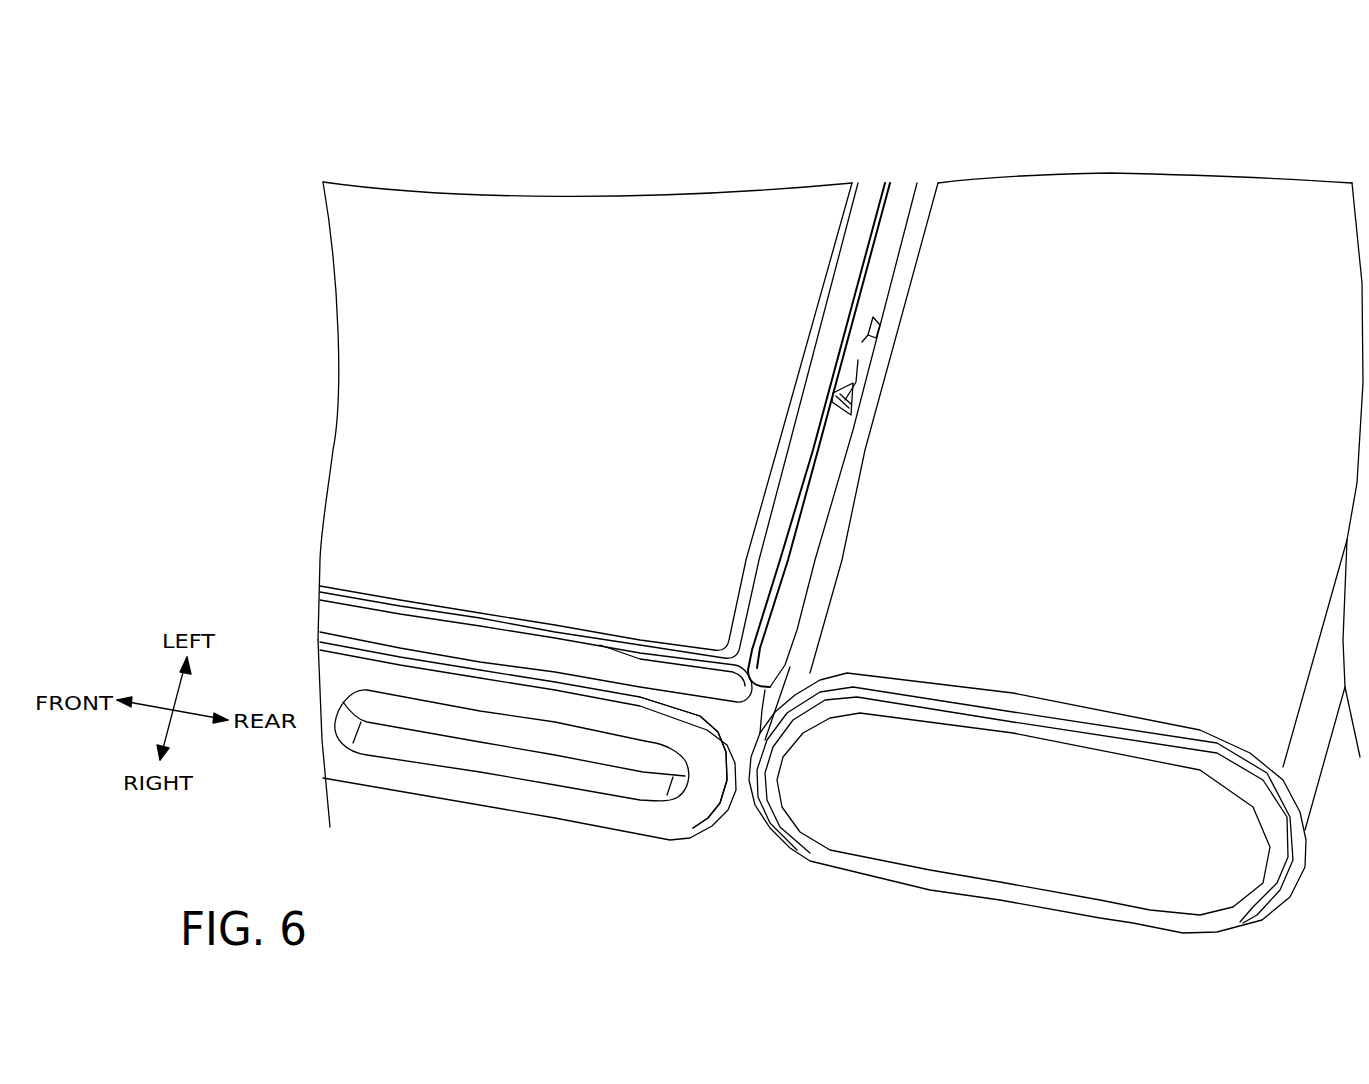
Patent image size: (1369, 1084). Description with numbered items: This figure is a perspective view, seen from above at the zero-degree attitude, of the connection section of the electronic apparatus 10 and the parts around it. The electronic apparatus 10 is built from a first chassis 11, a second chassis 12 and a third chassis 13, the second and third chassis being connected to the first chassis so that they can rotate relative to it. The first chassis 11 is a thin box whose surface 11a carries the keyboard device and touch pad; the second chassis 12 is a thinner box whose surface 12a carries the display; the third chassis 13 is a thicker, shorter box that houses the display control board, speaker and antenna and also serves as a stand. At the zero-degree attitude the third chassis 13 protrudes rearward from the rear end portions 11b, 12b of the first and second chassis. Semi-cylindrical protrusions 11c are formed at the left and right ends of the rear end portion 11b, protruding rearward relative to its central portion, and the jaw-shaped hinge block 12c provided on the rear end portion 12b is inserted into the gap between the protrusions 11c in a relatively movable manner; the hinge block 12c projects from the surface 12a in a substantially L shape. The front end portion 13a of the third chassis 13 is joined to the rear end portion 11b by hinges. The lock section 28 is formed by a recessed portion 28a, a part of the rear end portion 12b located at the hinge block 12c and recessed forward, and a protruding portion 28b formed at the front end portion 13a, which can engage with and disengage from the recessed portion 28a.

The electronic apparatus 10 is at (253, 130).
The first chassis 11 is at (418, 812).
The surface of the first chassis 11a is at (498, 665).
The rear end portion of the first chassis 11b is at (727, 723).
The semi-cylindrical protrusion 11c is at (792, 600).
The second chassis 12 is at (585, 248).
The surface of the second chassis 12a is at (647, 690).
The rear end portion of the second chassis 12b is at (902, 203).
The hinge block 12c is at (902, 203).
The third chassis 13 is at (1230, 248).
The front end portion of the third chassis 13a is at (750, 770).
The lock section 28 is at (1118, 105).
The recessed portion 28a is at (867, 347).
The protruding portion 28b is at (868, 355).